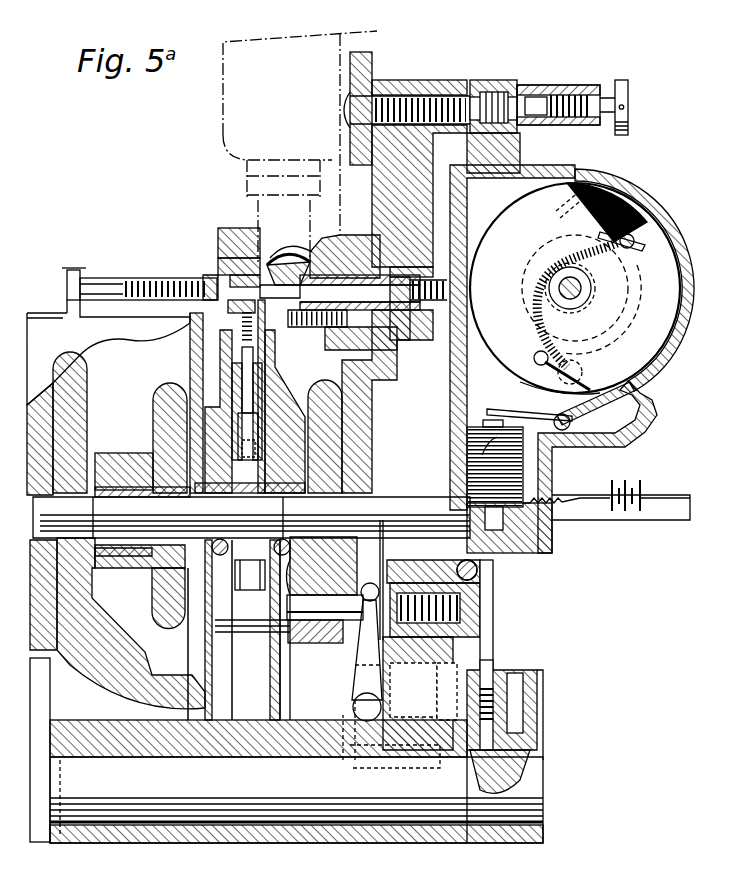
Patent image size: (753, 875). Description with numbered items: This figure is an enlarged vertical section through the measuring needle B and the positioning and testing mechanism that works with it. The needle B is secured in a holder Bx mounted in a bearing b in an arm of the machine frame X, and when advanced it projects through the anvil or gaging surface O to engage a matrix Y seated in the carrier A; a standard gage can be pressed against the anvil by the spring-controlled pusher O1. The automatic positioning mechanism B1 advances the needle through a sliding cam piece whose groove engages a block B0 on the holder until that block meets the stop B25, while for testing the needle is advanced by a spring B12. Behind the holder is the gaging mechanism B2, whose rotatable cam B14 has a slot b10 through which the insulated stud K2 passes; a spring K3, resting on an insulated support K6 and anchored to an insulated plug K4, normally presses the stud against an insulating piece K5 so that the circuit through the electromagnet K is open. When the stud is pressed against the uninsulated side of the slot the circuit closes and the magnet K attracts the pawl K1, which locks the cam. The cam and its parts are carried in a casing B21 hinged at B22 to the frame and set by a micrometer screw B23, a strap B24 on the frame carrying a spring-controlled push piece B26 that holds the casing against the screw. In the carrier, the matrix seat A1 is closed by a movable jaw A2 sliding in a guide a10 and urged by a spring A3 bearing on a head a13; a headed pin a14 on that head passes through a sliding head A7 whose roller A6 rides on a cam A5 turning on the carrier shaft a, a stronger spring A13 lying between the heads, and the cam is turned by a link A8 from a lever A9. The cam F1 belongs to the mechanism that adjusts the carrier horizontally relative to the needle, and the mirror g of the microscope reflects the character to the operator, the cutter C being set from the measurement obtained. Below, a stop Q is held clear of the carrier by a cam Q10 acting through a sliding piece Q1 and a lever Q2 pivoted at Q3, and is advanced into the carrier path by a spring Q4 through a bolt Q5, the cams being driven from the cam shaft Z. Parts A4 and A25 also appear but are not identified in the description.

The milling cutter C is at (300, 146).
The micrometer screw B23 is at (433, 87).
The strap B24 is at (530, 87).
The spring-controlled push piece B26 is at (530, 104).
The machine frame X is at (403, 163).
The casing B21 is at (603, 177).
The piece of insulating material K5 is at (610, 187).
The gaging mechanism B2 is at (633, 213).
The insulated stud K2 is at (633, 233).
The bearing b is at (348, 236).
The measuring needle B is at (285, 262).
The anvil O is at (220, 240).
The spring controlled pusher O1 is at (72, 278).
The movable jaw A2 is at (163, 277).
The carrier A is at (220, 257).
The guide a10 is at (222, 266).
The spring B12 is at (440, 267).
The needle moving mechanism B1 is at (575, 288).
The block B0 is at (427, 300).
The rotatable cam B14 is at (527, 366).
The slot b10 is at (633, 242).
The insulated support K6 is at (588, 290).
The spring K3 is at (596, 332).
The insulated plug K4 is at (647, 367).
The needle holder Bx is at (360, 312).
The matrix Y is at (108, 352).
The seat A1 is at (190, 323).
The spring A3 is at (193, 333).
The plunger A4 is at (220, 367).
The headed pin a14 is at (220, 390).
The cam A5 is at (290, 375).
The stronger spring A13 is at (300, 395).
The head a13 is at (265, 336).
The mirror g is at (300, 330).
The roller A6 is at (220, 413).
The sliding head A7 is at (220, 437).
The stop B25 is at (345, 400).
The shaft a is at (251, 517).
The pawl K1 is at (621, 484).
The electromagnet K is at (530, 473).
The cam F1 is at (116, 546).
The hinge B22 is at (493, 560).
The spring Q4 is at (480, 602).
The stop Q is at (325, 590).
The link A8 is at (240, 590).
The lever A9 is at (217, 670).
The bolt Q5 is at (362, 640).
The guide A25 is at (283, 687).
The cam Q10 is at (503, 710).
The cam shaft Z is at (286, 750).
The lever Q2 is at (363, 687).
The pivot Q3 is at (390, 760).
The sliding piece Q1 is at (437, 760).